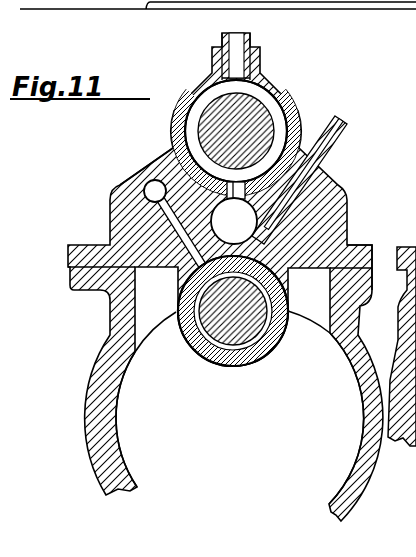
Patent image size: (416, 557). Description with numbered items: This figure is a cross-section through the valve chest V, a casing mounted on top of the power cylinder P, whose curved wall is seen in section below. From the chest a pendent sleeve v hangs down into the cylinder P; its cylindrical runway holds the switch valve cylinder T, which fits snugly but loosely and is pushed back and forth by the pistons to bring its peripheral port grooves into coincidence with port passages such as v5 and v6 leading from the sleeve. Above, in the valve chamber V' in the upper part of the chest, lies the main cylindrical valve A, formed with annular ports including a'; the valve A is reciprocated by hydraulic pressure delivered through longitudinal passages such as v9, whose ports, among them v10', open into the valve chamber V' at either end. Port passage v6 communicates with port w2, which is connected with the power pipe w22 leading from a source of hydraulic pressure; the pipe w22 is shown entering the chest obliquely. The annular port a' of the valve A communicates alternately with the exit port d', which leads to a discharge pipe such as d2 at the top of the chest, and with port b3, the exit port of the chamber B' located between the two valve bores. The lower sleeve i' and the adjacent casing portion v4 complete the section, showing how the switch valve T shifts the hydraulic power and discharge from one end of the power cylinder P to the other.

The valve chest V is at (195, 277).
The valve chamber V' is at (253, 137).
The pendent sleeve v is at (185, 337).
The adjacent casing section v4 is at (402, 294).
The port passage v5 is at (373, 247).
The port passage v6 is at (212, 217).
The longitudinal passage v9 is at (153, 191).
The port v10' is at (136, 158).
The main cylindrical valve A is at (232, 120).
The annular port a' is at (241, 138).
The exit port d' is at (262, 53).
The discharge pipe d2 is at (221, 34).
The exit port b3 is at (247, 194).
The chamber B' is at (234, 221).
The power pipe w22 is at (350, 120).
The port w2 is at (283, 217).
The switch valve cylinder T is at (233, 309).
The lower bearing sleeve i' is at (243, 329).
The power cylinder P is at (240, 407).